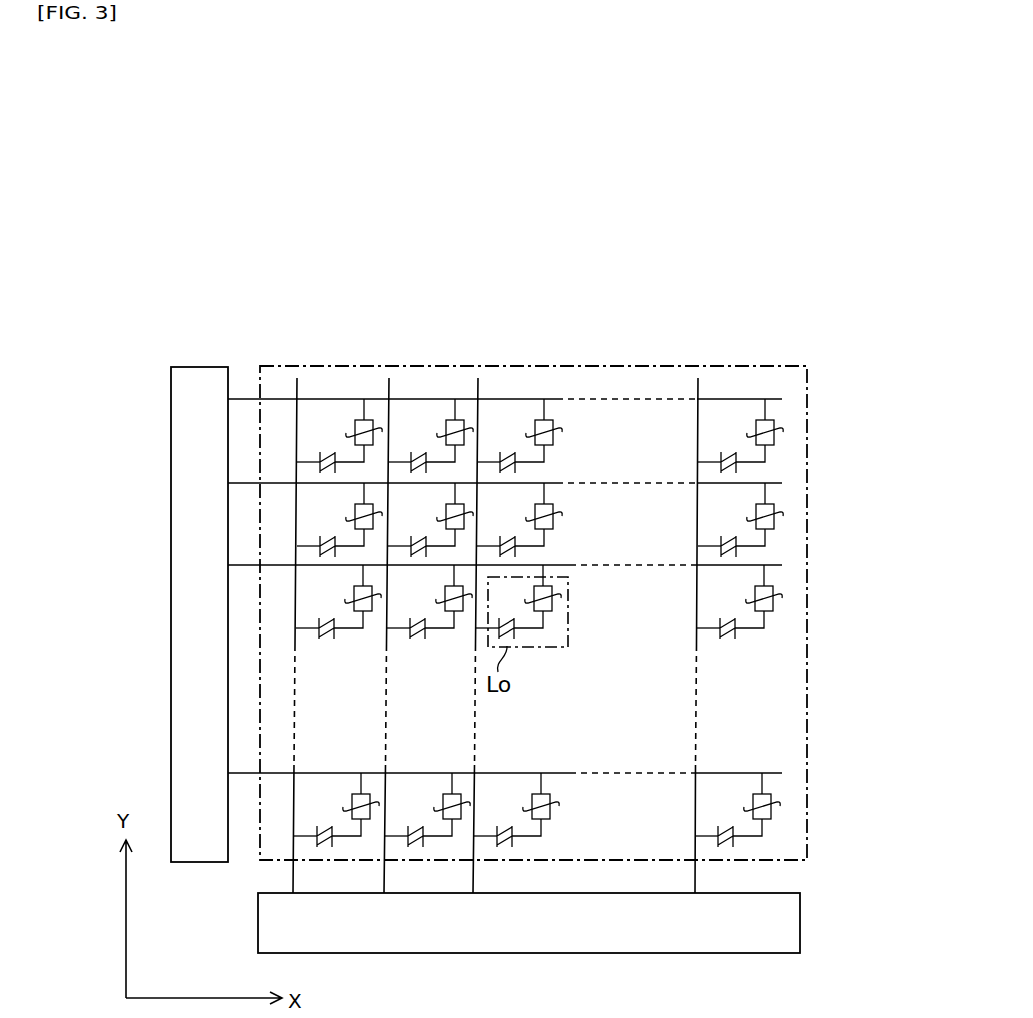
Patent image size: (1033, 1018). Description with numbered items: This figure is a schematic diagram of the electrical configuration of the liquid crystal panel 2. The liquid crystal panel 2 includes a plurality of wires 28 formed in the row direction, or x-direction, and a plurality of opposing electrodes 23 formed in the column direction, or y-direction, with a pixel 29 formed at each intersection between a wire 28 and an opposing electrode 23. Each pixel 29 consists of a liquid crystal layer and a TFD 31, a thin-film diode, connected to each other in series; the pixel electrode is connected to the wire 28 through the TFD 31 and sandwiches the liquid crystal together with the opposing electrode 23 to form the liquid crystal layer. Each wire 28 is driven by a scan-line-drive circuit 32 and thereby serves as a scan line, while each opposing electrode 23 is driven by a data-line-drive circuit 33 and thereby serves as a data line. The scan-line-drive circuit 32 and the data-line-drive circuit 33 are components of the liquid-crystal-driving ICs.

The liquid crystal panel 2 is at (560, 363).
The opposing electrode 23 is at (700, 414).
The wire 28 is at (325, 398).
The pixel 29 is at (557, 652).
The TFD (thin-film diode) 31 is at (552, 603).
The scan-line-drive circuit 32 is at (170, 523).
The data-line-drive circuit 33 is at (551, 953).